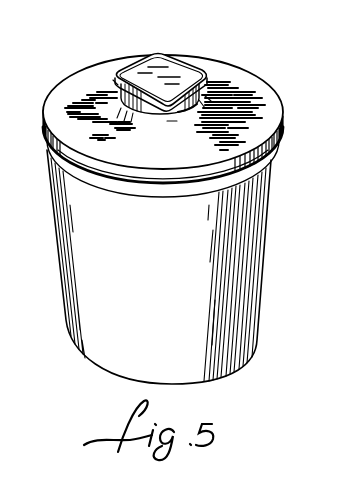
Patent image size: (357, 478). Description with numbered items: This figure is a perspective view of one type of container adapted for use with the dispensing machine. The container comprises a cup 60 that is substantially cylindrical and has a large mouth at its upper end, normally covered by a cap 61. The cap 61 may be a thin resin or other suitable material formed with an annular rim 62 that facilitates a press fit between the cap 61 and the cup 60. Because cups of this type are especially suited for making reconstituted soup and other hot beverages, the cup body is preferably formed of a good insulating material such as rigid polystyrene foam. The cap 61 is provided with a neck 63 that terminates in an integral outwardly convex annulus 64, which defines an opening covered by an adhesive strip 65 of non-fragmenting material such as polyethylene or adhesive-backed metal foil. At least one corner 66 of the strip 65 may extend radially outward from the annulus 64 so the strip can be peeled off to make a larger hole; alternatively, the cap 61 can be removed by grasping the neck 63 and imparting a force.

The cup 60 is at (230, 227).
The cap 61 is at (242, 104).
The annular rim 62 is at (280, 146).
The neck 63 is at (165, 116).
The outwardly convex annulus 64 is at (198, 102).
The adhesive strip 65 is at (163, 78).
The corner 66 is at (90, 73).